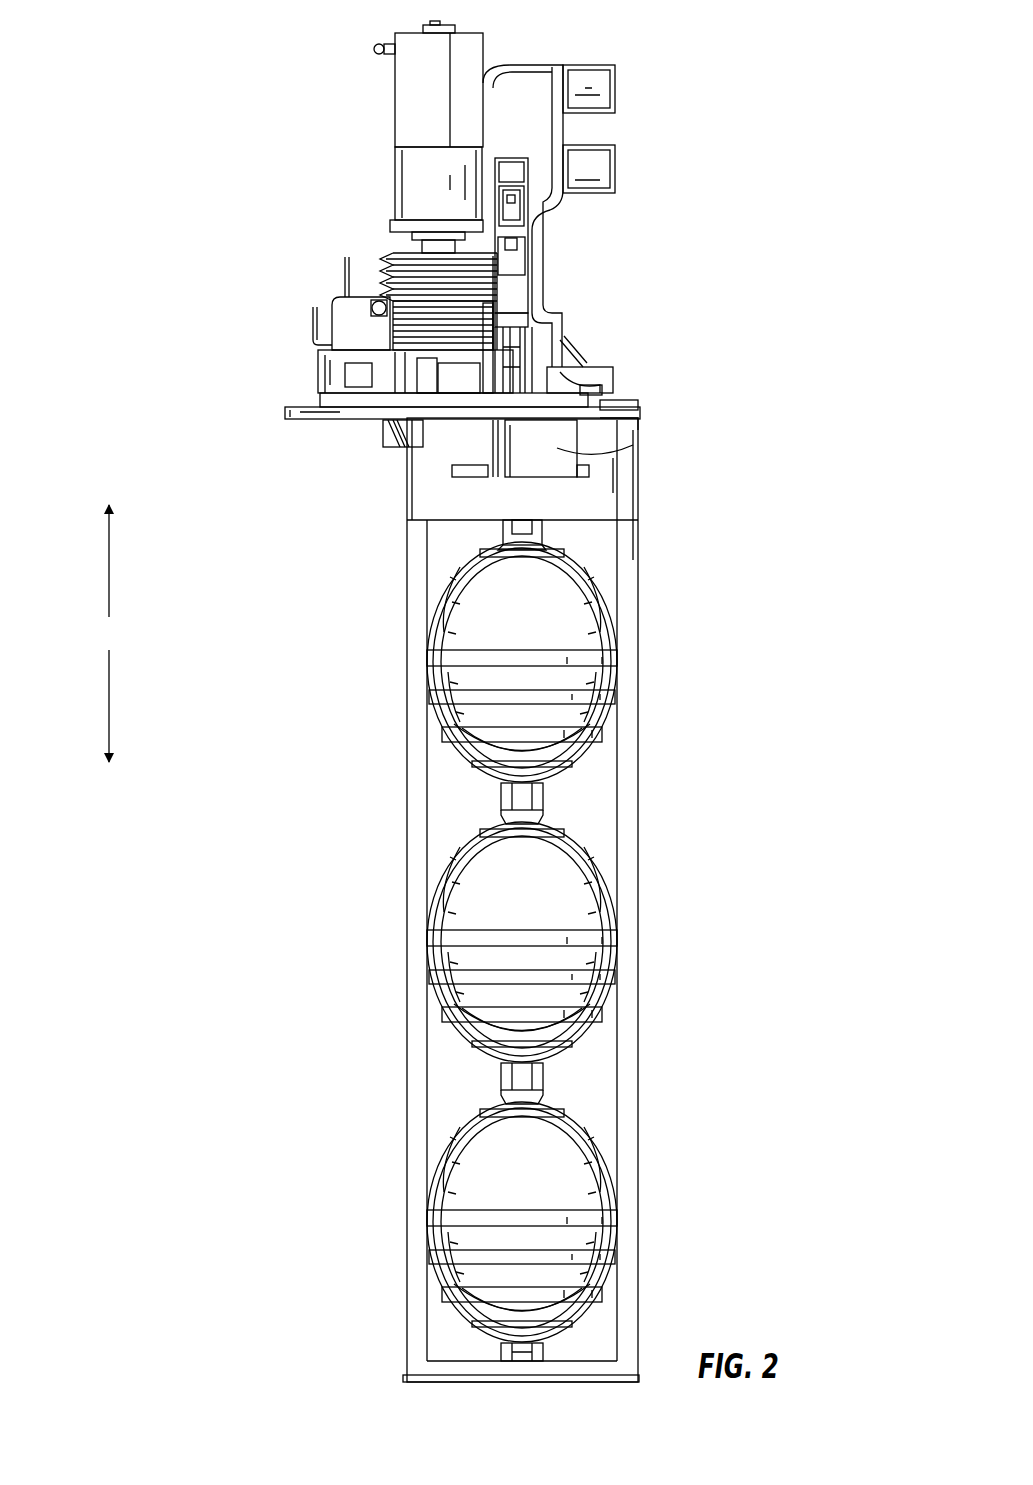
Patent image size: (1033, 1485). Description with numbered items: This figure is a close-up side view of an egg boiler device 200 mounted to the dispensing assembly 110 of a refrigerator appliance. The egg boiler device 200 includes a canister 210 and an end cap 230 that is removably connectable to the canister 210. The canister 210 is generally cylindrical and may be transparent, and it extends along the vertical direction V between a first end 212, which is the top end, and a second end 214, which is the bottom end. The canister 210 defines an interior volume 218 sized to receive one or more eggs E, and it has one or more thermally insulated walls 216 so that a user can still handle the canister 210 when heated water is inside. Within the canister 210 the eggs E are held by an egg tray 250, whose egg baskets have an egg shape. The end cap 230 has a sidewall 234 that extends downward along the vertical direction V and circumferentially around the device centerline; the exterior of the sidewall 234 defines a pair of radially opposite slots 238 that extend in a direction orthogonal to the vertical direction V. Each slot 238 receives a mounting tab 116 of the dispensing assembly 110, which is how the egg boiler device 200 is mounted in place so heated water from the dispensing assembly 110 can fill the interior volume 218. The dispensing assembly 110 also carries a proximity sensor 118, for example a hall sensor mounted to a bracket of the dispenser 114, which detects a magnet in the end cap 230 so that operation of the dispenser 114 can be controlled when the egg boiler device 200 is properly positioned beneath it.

The dispensing assembly 110 is at (250, 103).
The dispenser 114 is at (376, 215).
The mounting tab 116 is at (560, 455).
The proximity sensor 118 is at (318, 371).
The egg boiler device 200 is at (740, 550).
The canister 210 is at (638, 807).
The first end 212 is at (385, 527).
The second end 214 is at (376, 1381).
The thermally insulated walls 216 is at (640, 766).
The interior volume 218 is at (447, 809).
The end cap 230 is at (638, 473).
The sidewall 234 is at (620, 495).
The slots 238 is at (447, 471).
The egg tray 250 is at (445, 1044).
The eggs E is at (484, 620).
The vertical direction V is at (109, 633).